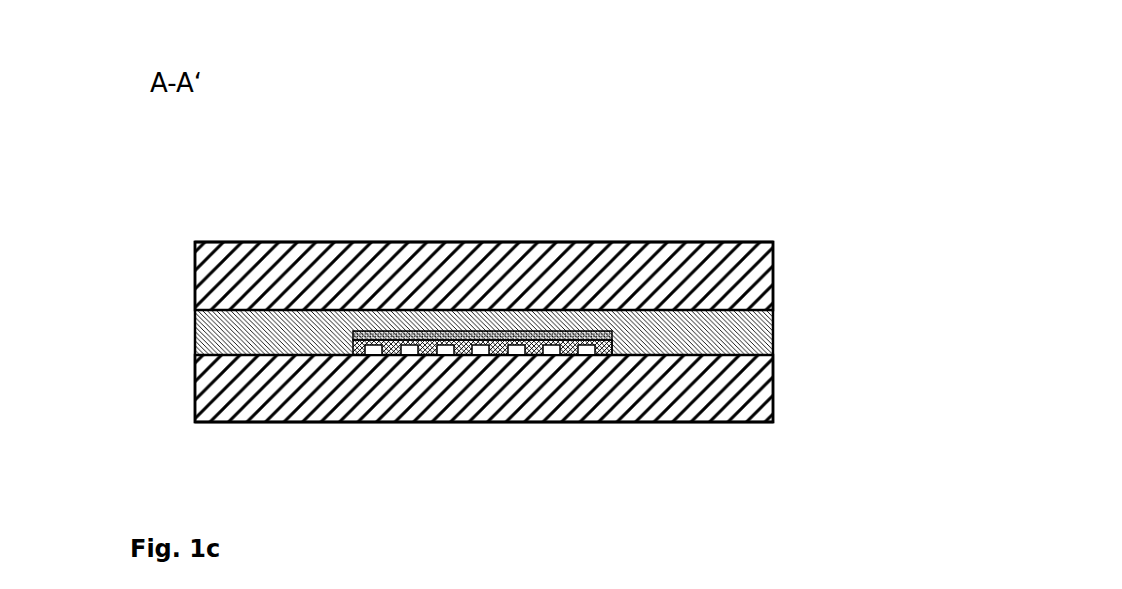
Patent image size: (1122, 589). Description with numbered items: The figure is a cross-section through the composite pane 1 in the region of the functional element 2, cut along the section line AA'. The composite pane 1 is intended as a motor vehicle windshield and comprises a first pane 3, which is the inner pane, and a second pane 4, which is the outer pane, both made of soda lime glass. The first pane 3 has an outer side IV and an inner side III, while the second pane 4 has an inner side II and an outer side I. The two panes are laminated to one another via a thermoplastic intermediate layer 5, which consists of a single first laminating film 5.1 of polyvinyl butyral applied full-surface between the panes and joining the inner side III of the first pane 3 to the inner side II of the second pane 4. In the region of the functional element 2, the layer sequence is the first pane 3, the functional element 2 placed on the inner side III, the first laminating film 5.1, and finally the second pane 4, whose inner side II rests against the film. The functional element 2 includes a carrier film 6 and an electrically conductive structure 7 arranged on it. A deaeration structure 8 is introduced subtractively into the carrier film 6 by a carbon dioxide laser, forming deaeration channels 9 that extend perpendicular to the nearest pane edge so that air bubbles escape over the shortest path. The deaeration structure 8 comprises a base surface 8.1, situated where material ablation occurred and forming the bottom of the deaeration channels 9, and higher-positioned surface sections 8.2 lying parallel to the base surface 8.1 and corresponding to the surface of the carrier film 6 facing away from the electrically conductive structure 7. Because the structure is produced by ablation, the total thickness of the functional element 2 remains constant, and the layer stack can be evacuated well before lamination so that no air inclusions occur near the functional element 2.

The composite pane 1 is at (845, 283).
The functional element 2 is at (497, 234).
The first pane 3 is at (765, 368).
The second pane 4 is at (745, 284).
The thermoplastic intermediate layer 5 is at (745, 340).
The first laminating film 5.1 is at (205, 329).
The carrier film 6 is at (607, 342).
The electrically conductive structure 7 is at (576, 336).
The deaeration structure 8 is at (480, 460).
The base surface 8.1 is at (515, 357).
The higher-positioned surface sections 8.2 is at (568, 357).
The deaeration channels 9 is at (587, 357).
The outer side of the second pane I is at (296, 238).
The inner side of the second pane II is at (274, 305).
The inner side of the first pane III is at (302, 360).
The outer side of the first pane IV is at (306, 426).